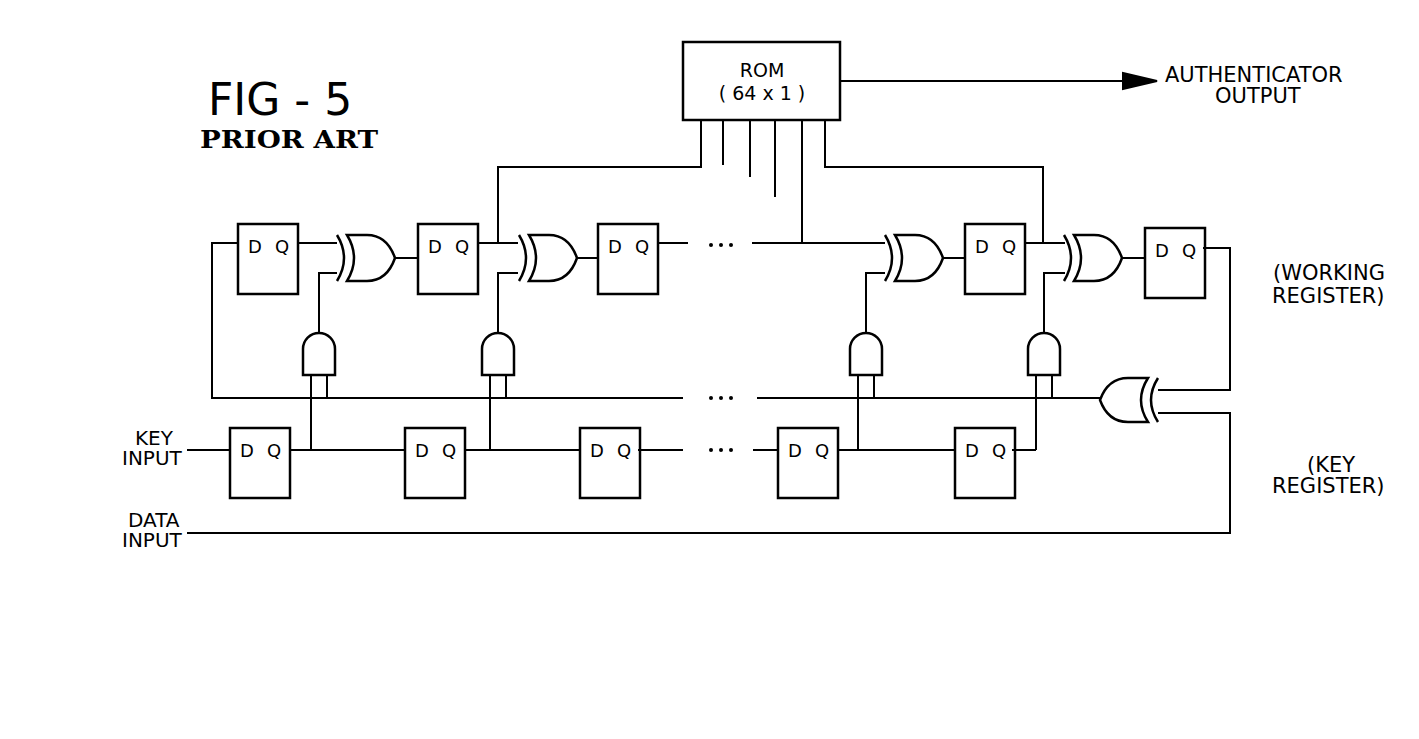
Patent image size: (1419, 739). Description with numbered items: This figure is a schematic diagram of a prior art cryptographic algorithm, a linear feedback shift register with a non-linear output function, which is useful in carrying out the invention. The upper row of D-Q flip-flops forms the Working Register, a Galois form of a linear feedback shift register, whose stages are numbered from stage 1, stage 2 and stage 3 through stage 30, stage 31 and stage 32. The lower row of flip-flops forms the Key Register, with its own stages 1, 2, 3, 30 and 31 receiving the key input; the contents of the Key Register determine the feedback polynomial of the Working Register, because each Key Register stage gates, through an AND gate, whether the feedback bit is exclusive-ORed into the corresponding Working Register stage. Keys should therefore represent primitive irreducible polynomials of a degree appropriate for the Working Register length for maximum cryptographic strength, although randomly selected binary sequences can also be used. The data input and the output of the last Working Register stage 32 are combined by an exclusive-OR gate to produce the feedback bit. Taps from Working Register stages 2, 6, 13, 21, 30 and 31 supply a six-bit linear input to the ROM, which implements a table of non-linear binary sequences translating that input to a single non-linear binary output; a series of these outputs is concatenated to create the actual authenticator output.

The register stage 1 flip-flop 1 is at (264, 348).
The register stage 2 flip-flop / ROM address tap 2 is at (697, 172).
The register stage 3 flip-flop 3 is at (619, 348).
The ROM address tap from stage 6 is at (722, 156).
The ROM address tap from stage 13 is at (752, 163).
The ROM address tap from stage 21 is at (779, 173).
The register stage 30 flip-flop / ROM address tap 30 is at (802, 213).
The register stage 31 flip-flop / ROM address tap 31 is at (895, 167).
The working register stage 32 flip-flop 32 is at (1175, 251).